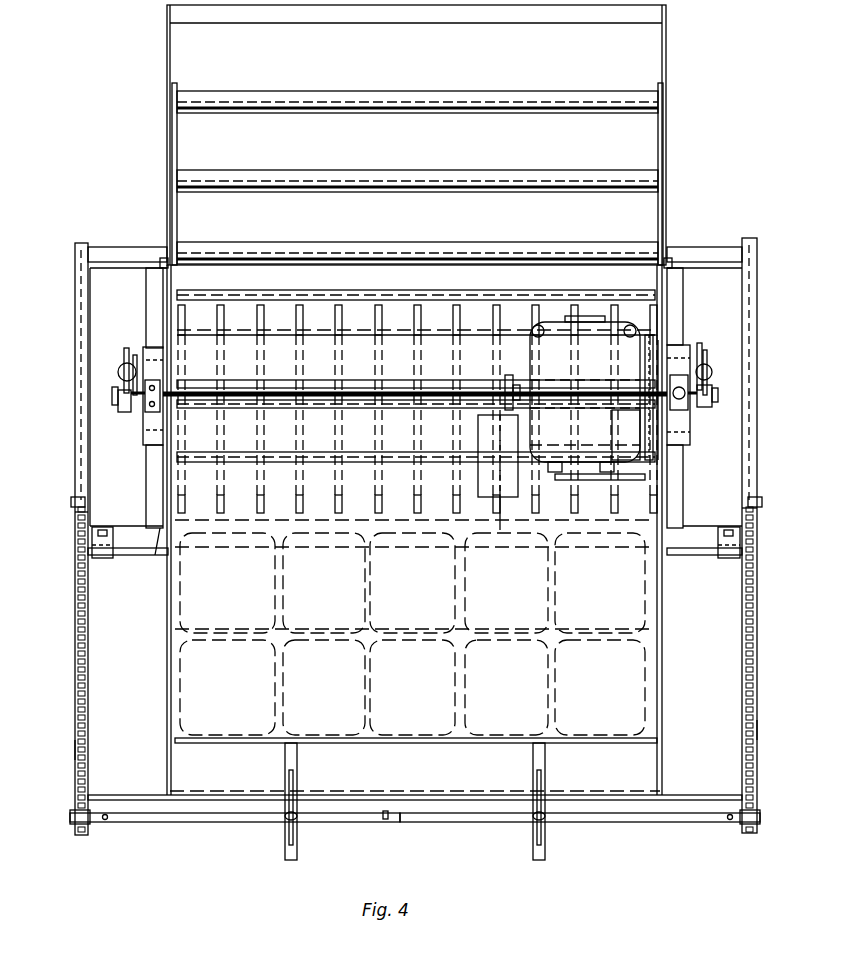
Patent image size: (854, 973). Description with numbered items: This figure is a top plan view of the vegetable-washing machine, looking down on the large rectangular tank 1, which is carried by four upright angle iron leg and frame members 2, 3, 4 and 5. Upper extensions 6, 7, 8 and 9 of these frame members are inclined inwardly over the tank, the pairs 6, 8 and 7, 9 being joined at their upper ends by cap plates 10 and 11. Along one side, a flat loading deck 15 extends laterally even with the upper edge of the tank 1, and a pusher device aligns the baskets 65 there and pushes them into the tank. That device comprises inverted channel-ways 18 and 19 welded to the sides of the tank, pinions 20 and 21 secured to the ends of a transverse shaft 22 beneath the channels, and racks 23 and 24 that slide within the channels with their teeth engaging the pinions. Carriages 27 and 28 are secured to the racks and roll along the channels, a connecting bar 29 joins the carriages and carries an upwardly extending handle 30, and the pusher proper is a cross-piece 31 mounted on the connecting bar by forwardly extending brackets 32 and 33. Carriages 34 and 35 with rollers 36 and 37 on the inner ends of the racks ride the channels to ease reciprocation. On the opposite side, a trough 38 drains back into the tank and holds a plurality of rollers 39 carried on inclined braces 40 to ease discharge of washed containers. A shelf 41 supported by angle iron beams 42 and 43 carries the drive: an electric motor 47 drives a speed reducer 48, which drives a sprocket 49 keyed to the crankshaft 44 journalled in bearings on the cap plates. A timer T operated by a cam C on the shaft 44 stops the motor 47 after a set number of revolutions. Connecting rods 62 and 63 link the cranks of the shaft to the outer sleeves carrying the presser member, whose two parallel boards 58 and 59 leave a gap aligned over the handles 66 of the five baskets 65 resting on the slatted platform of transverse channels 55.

The tank 1 is at (75, 313).
The leg and frame member 2 is at (155, 532).
The leg and frame member 3 is at (681, 548).
The leg and frame member 4 is at (155, 265).
The leg and frame member 5 is at (678, 258).
The upper extension 6 is at (146, 478).
The upper extension 7 is at (683, 470).
The upper extension 8 is at (155, 303).
The upper extension 9 is at (672, 300).
The cap plate 10 is at (146, 432).
The cap plate 11 is at (690, 432).
The loading deck 15 is at (170, 762).
The channel-way 18 is at (75, 428).
The channel-way 19 is at (757, 430).
The pinion 20 is at (75, 570).
The pinion 21 is at (760, 555).
The transverse shaft 22 is at (128, 555).
The rack 23 is at (73, 750).
The rack 24 is at (757, 732).
The carriage 27 is at (70, 818).
The carriage 28 is at (760, 818).
The connecting bar 29 is at (232, 822).
The handle 30 is at (402, 822).
The cross-piece 31 is at (408, 743).
The bracket 32 is at (297, 767).
The bracket 33 is at (545, 767).
The carriage 34 is at (71, 500).
The carriage 35 is at (762, 500).
The roller 36 is at (75, 512).
The roller 37 is at (757, 508).
The trough 38 is at (167, 60).
The roller 39 is at (418, 91).
The inclined brace 40 is at (177, 146).
The shelf 41 is at (555, 325).
The angle iron beam 42 is at (428, 300).
The angle iron beam 43 is at (437, 462).
The crankshaft 44 is at (353, 390).
The electric motor 47 is at (587, 398).
The speed reducer 48 is at (626, 435).
The sprocket 49 is at (645, 360).
The channel 55 is at (370, 487).
The board 58 is at (237, 350).
The board 59 is at (237, 438).
The connecting rod 62 is at (120, 378).
The connecting rod 63 is at (710, 378).
The basket 65 is at (283, 697).
The handle 66 is at (252, 628).
The cam C is at (509, 375).
The timer T is at (478, 432).